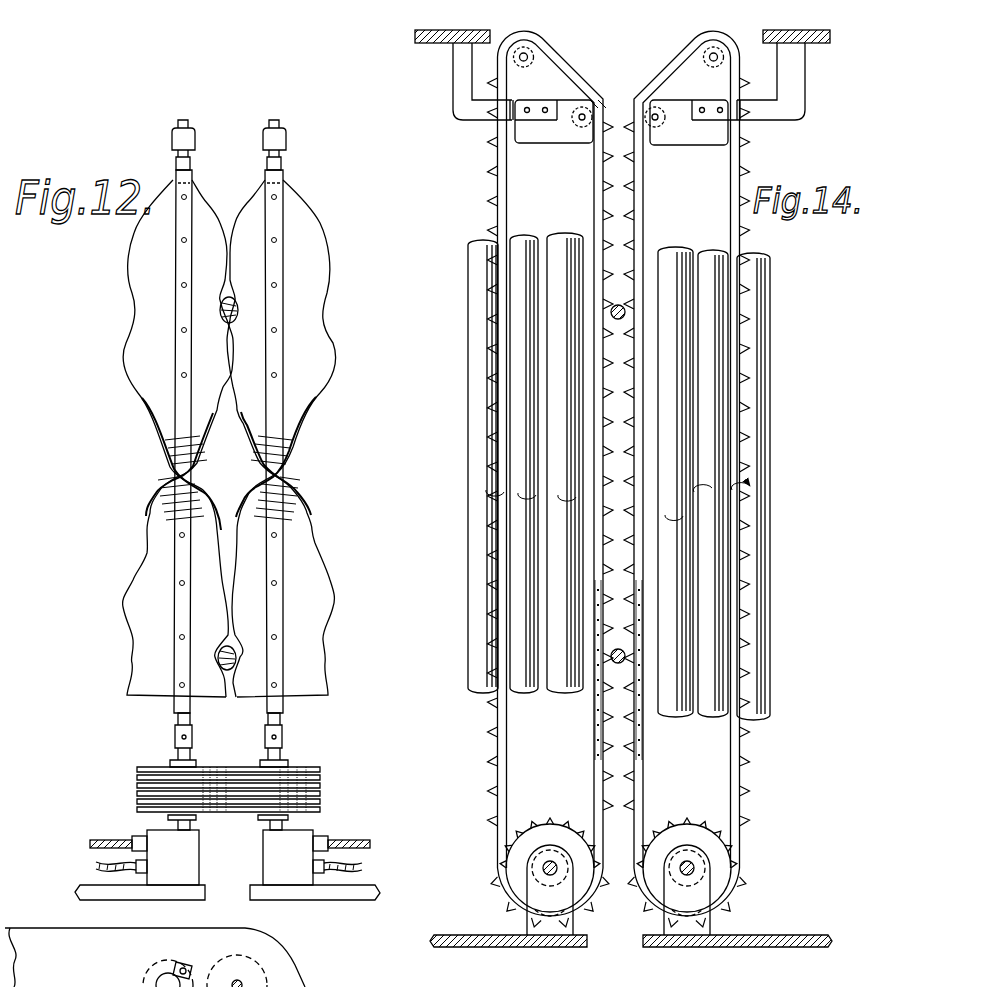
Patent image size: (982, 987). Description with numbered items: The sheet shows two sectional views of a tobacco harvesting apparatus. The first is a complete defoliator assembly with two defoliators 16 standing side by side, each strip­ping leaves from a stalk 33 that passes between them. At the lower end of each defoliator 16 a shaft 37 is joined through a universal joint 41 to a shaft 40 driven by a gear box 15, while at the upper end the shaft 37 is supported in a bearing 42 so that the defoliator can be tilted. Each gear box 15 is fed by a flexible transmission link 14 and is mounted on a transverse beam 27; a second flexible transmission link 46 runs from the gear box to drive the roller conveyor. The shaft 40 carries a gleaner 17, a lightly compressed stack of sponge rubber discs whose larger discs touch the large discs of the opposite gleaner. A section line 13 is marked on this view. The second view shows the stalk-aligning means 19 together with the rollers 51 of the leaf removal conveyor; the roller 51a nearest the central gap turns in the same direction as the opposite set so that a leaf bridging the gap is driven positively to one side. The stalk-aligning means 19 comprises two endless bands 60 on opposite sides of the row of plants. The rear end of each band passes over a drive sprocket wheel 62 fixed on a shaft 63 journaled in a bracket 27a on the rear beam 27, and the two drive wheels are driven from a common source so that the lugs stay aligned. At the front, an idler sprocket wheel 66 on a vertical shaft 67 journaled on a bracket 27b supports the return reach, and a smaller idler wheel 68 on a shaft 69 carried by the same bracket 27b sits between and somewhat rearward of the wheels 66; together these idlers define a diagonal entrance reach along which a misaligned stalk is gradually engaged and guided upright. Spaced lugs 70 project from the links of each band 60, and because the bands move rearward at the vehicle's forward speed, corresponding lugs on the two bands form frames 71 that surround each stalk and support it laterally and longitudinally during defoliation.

In FIG. 12, the section line 13 is at (80, 817).
In FIG. 12, the flexible transmission link 14 is at (118, 838).
In FIG. 12, the gear box 15 is at (270, 860).
In FIG. 12, the defoliator 16 is at (128, 420).
In FIG. 12, the gleaner 17 is at (128, 780).
In FIG. 14, the stalk-aligning means 19 is at (780, 507).
In FIG. 12, the transverse beam 27 is at (158, 898).
In FIG. 14, the transverse beam 27 is at (420, 38).
In FIG. 14, the bracket 27a is at (537, 892).
In FIG. 14, the bracket 27b is at (455, 110).
In FIG. 12, the stalk 33 is at (238, 311).
In FIG. 12, the shaft 37 is at (267, 160).
In FIG. 12, the shaft 40 is at (263, 818).
In FIG. 12, the universal joint 41 is at (176, 741).
In FIG. 12, the bearing 42 is at (188, 127).
In FIG. 12, the flexible transmission link 46 is at (100, 864).
In FIG. 14, the roller 51 is at (513, 365).
In FIG. 14, the roller nearest the central gap 51a is at (570, 235).
In FIG. 14, the endless band 60 is at (507, 717).
In FIG. 14, the drive sprocket wheel 62 is at (552, 820).
In FIG. 14, the shaft 63 is at (547, 868).
In FIG. 14, the idler sprocket wheel 66 is at (538, 58).
In FIG. 14, the vertical shaft 67 is at (706, 58).
In FIG. 14, the idler wheel 68 is at (594, 98).
In FIG. 14, the shaft 69 is at (653, 110).
In FIG. 14, the lug 70 is at (633, 428).
In FIG. 14, the frame 71 is at (627, 549).